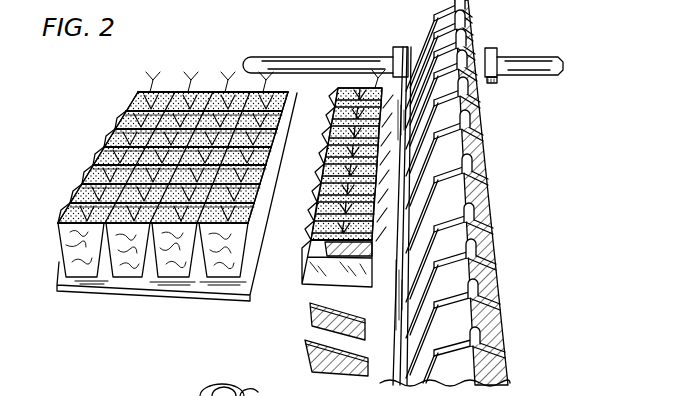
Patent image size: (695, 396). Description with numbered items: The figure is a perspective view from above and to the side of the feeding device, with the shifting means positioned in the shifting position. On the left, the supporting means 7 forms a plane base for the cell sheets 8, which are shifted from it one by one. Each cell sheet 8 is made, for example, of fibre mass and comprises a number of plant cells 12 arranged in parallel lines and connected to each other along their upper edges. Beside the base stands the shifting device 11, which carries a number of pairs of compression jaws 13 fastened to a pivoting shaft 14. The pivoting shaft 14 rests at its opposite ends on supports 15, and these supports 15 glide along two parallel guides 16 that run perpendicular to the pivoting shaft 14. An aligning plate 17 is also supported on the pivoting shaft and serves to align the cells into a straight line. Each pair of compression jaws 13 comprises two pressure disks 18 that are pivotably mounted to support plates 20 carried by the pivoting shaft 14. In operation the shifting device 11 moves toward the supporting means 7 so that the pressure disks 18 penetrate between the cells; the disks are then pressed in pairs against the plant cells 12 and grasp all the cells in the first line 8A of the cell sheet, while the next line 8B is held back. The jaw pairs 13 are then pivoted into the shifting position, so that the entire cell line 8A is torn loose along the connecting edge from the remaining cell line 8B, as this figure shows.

The supporting means 7 is at (78, 299).
The cell sheet 8 is at (120, 280).
The first line of the cell sheet 8A is at (311, 281).
The next line of the cell sheet 8B is at (218, 281).
The shifting device 11 is at (407, 193).
The plant cells 12 is at (116, 141).
The pairs of compression jaws 13 is at (306, 330).
The pivoting shaft 14 is at (472, 240).
The supports 15 is at (426, 28).
The guides 16 is at (313, 67).
The aligning plate 17 is at (370, 362).
The pressure disks 18 is at (304, 252).
The support plates 20 is at (486, 310).